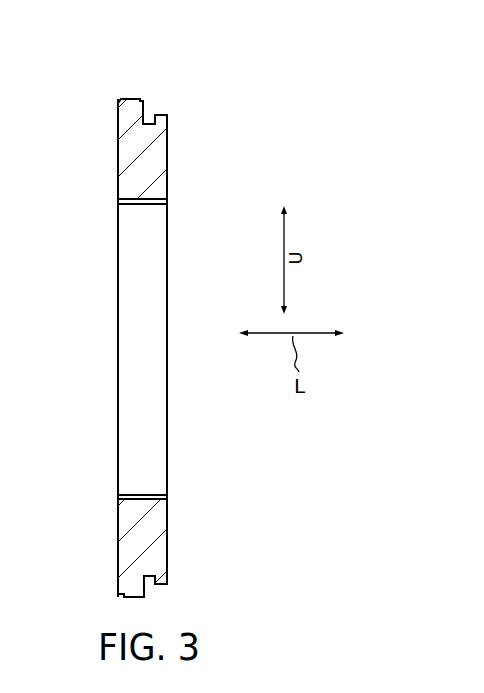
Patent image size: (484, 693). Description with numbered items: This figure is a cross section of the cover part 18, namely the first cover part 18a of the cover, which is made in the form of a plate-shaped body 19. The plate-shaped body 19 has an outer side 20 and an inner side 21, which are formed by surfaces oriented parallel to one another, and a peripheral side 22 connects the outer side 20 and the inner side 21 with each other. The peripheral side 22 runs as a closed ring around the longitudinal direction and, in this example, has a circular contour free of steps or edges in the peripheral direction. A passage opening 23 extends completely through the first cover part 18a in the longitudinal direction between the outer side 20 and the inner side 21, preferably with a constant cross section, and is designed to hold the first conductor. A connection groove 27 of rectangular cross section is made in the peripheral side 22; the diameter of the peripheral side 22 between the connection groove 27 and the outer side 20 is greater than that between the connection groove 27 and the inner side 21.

The cover part 18 is at (264, 313).
The first cover part 18a is at (142, 348).
The plate-shaped body 19 is at (119, 548).
The outer side 20 is at (117, 153).
The inner side 21 is at (168, 153).
The peripheral side 22 is at (132, 92).
The passage opening 23 is at (118, 310).
The connection groove 27 is at (149, 118).